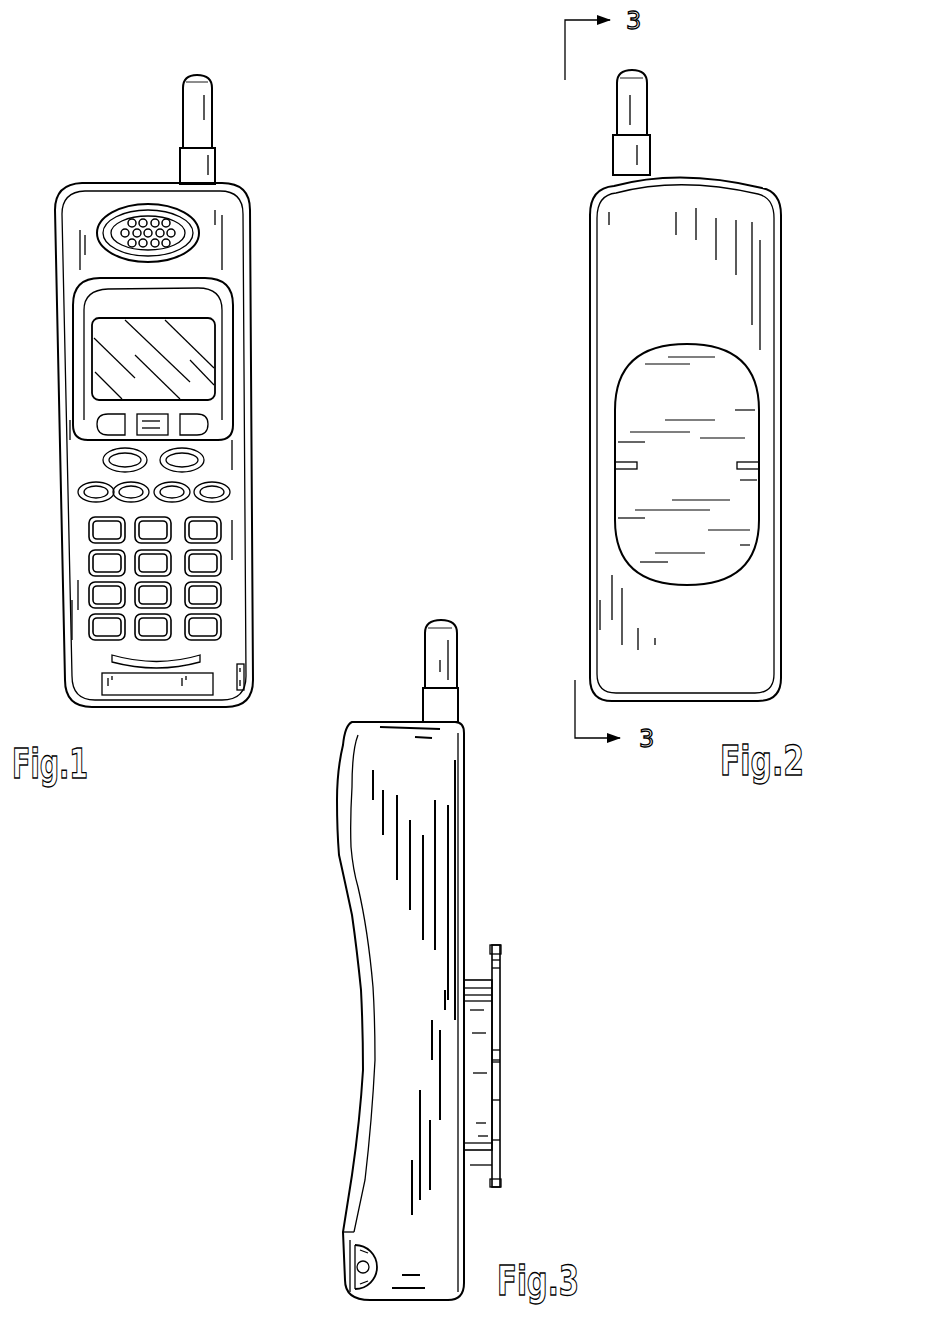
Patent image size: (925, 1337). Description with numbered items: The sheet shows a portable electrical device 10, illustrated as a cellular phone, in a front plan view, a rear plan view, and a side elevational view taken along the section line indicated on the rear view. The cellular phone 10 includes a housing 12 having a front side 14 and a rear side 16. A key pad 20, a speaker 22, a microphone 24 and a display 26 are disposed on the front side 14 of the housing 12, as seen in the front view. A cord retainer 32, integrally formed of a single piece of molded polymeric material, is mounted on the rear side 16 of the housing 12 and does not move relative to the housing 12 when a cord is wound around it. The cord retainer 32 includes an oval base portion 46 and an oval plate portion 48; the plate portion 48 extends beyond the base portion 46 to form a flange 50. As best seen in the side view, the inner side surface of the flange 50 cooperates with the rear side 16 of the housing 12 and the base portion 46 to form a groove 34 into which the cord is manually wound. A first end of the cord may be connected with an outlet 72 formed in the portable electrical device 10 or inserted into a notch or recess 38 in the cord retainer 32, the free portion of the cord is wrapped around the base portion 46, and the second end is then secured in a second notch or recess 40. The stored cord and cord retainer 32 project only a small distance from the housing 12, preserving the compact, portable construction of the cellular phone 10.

In FIG. 1, the portable electrical device 10 is at (292, 208).
In FIG. 2, the portable electrical device 10 is at (776, 142).
In FIG. 3, the portable electrical device 10 is at (318, 823).
In FIG. 1, the housing 12 is at (242, 417).
In FIG. 2, the housing 12 is at (622, 272).
In FIG. 3, the housing 12 is at (378, 1170).
In FIG. 1, the front side 14 is at (225, 508).
In FIG. 3, the front side 14 is at (360, 1022).
In FIG. 2, the rear side 16 is at (630, 320).
In FIG. 3, the rear side 16 is at (465, 846).
In FIG. 1, the key pad 20 is at (215, 578).
In FIG. 1, the speaker 22 is at (138, 222).
In FIG. 1, the microphone 24 is at (150, 686).
In FIG. 1, the display 26 is at (185, 355).
In FIG. 2, the cord retainer 32 is at (618, 534).
In FIG. 3, the cord retainer 32 is at (504, 1018).
In FIG. 3, the groove 34 is at (480, 1165).
In FIG. 2, the notch or recess 38 is at (615, 465).
In FIG. 3, the notch or recess 38 is at (498, 1063).
In FIG. 2, the second notch or recess 40 is at (760, 466).
In FIG. 3, the base portion 46 is at (480, 1113).
In FIG. 2, the plate portion 48 is at (645, 391).
In FIG. 3, the plate portion 48 is at (498, 968).
In FIG. 3, the flange 50 is at (541, 1040).
In FIG. 3, the outlet 72 is at (362, 1268).